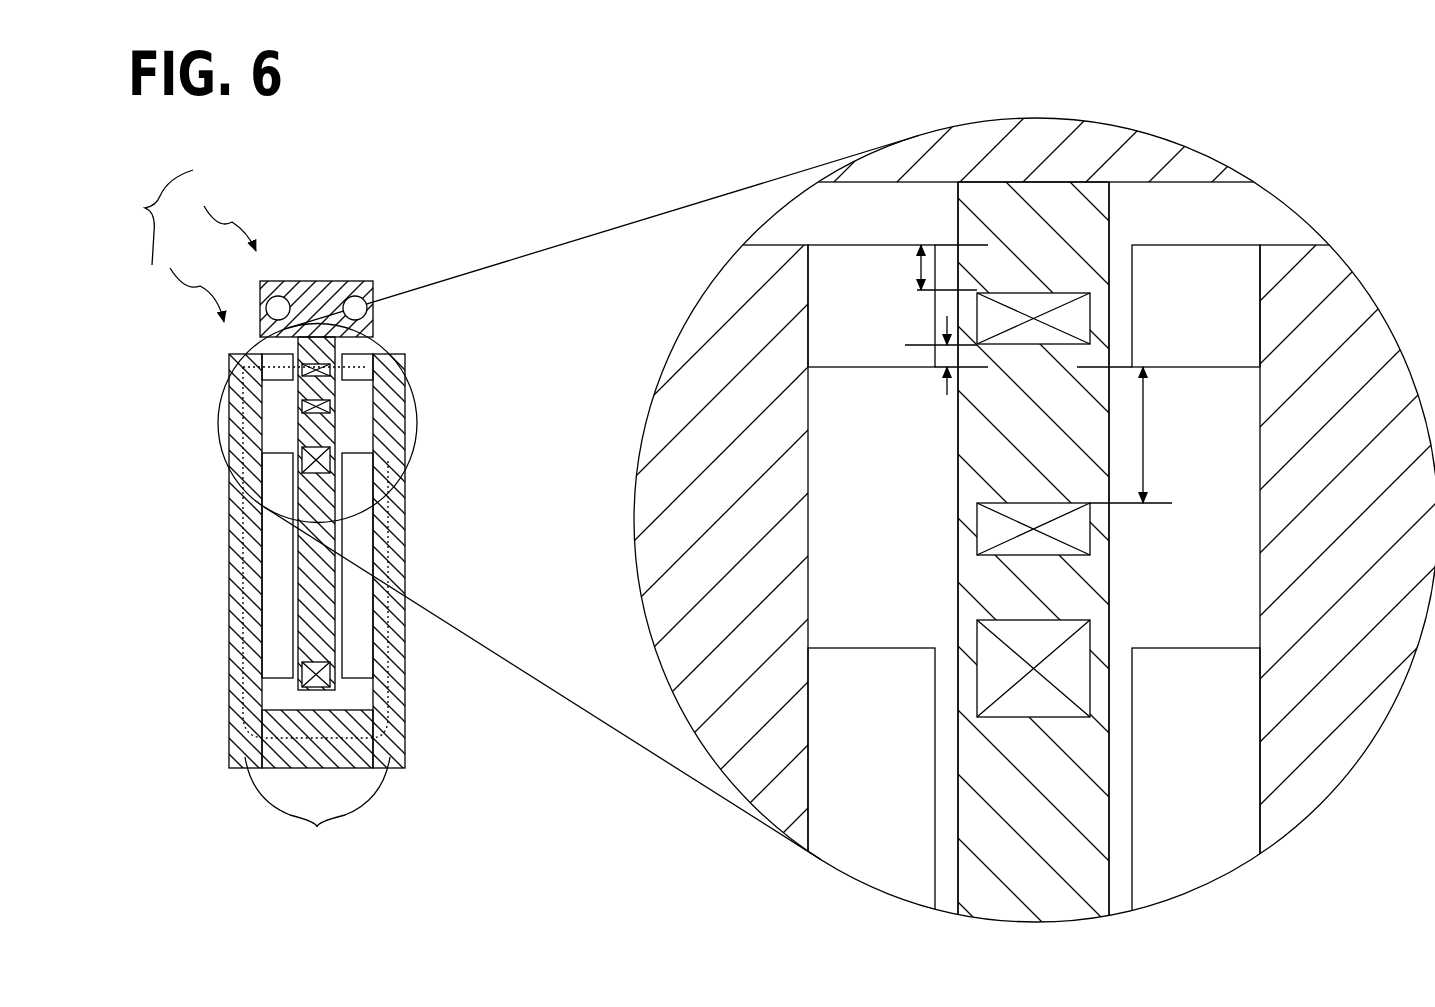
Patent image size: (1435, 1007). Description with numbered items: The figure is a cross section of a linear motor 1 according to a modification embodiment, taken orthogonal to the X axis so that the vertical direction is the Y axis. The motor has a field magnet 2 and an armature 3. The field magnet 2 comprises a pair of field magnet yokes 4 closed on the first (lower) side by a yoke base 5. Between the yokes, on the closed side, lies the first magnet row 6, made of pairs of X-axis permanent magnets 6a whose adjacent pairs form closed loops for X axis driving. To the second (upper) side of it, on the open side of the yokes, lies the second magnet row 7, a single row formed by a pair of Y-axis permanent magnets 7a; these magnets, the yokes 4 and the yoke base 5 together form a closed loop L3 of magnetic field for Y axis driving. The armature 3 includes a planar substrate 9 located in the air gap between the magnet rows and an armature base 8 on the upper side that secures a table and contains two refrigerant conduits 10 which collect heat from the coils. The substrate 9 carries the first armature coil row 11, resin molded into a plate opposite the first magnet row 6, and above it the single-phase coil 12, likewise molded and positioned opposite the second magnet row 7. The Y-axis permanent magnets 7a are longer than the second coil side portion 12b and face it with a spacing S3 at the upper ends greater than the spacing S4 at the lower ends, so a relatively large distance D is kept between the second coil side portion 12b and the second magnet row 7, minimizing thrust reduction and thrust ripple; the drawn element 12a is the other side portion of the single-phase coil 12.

The linear motor 1 is at (158, 217).
The field magnet 2 is at (193, 280).
The armature 3 is at (222, 215).
The field magnet yokes 4 is at (317, 810).
The yoke base 5 is at (265, 752).
The first magnet row 6 is at (358, 690).
The X-axis permanent magnets 6a is at (868, 660).
The second magnet row 7 is at (357, 393).
The Y-axis permanent magnets 7a is at (868, 358).
The armature base 8 is at (304, 290).
The substrate 9 is at (310, 583).
The refrigerant conduits 10 is at (310, 321).
The first armature coil row 11 is at (293, 456).
The single-phase coil 12 is at (342, 364).
The lower permanent magnet 12a is at (1086, 530).
The second coil side portion 12b is at (1086, 318).
The closed loop of magnetic field L3 is at (242, 628).
The spacing S3 is at (901, 270).
The spacing S4 is at (930, 363).
The distance D is at (1160, 435).